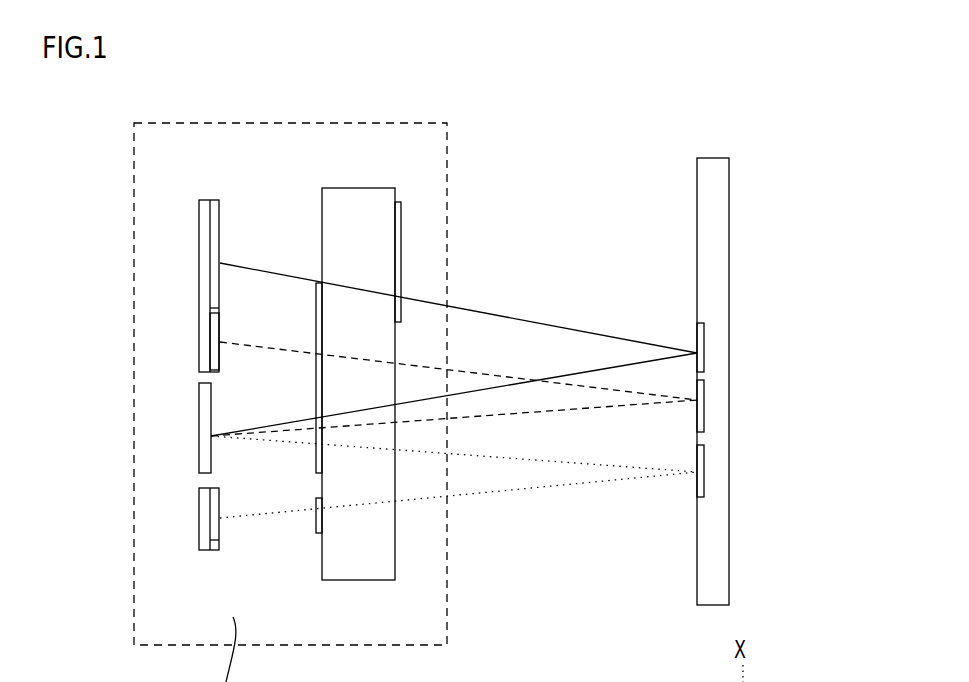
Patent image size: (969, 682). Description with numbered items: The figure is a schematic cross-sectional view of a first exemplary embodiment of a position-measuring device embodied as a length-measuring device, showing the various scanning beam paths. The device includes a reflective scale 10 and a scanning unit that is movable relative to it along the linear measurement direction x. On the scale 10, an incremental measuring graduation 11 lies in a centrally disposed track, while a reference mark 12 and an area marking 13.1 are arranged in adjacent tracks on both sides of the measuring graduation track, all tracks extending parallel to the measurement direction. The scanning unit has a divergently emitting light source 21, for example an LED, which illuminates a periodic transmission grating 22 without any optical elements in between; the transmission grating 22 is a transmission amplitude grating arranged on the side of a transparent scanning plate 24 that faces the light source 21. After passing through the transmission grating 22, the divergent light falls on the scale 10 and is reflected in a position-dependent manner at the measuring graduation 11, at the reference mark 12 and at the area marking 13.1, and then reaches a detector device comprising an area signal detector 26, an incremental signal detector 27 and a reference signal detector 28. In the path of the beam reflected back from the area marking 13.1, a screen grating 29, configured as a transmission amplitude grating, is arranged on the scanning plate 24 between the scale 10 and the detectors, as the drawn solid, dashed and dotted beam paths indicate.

The scale 10 is at (697, 600).
The incremental measuring graduation 11 is at (701, 410).
The reference mark 12 is at (701, 478).
The area marking 13.1 is at (701, 336).
The light source 21 is at (205, 452).
The transmission grating 22 is at (316, 456).
The scanning plate 24 is at (363, 560).
The area signal detector 26 is at (199, 218).
The incremental signal detector 27 is at (210, 340).
The reference signal detector 28 is at (210, 538).
The screen grating 29 is at (401, 243).